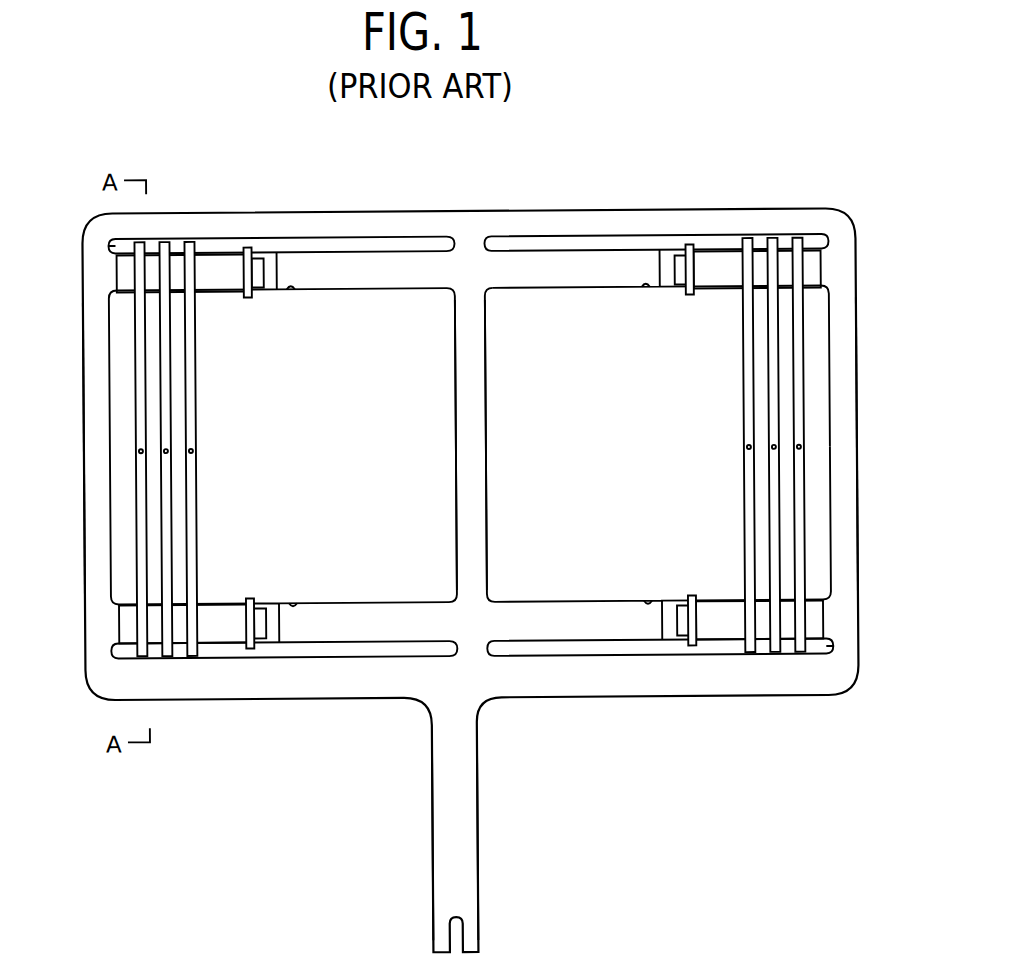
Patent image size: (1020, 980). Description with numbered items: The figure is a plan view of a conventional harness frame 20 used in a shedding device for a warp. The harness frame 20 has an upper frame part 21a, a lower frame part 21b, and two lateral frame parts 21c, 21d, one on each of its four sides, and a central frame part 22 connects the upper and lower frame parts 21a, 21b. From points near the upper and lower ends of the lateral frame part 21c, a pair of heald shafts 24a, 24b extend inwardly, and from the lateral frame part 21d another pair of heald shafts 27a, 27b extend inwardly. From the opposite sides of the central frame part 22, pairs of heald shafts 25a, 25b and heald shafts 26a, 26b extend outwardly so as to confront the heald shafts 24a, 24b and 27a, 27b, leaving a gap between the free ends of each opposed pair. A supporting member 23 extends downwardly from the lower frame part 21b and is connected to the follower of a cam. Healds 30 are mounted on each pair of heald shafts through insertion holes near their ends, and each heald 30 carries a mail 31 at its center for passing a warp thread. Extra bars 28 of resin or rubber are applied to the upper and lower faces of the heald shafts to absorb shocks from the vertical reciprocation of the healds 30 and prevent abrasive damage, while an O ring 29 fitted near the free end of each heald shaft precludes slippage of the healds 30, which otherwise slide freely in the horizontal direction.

The harness frame 20 is at (856, 272).
The upper frame part 21a is at (505, 212).
The lower frame part 21b is at (670, 690).
The lateral frame part 21c is at (84, 388).
The lateral frame part 21d is at (857, 382).
The central frame part 22 is at (487, 472).
The supporting member 23 is at (474, 816).
The heald shaft 24a is at (231, 284).
The heald shaft 24b is at (218, 615).
The heald shaft 25a is at (397, 278).
The heald shaft 25b is at (378, 617).
The heald shaft 26a is at (589, 280).
The heald shaft 26b is at (550, 616).
The heald shaft 27a is at (725, 272).
The heald shaft 27b is at (701, 612).
The extra bar 28 is at (213, 250).
The O ring 29 is at (250, 269).
The heald 30 is at (199, 408).
The mail 31 is at (195, 452).